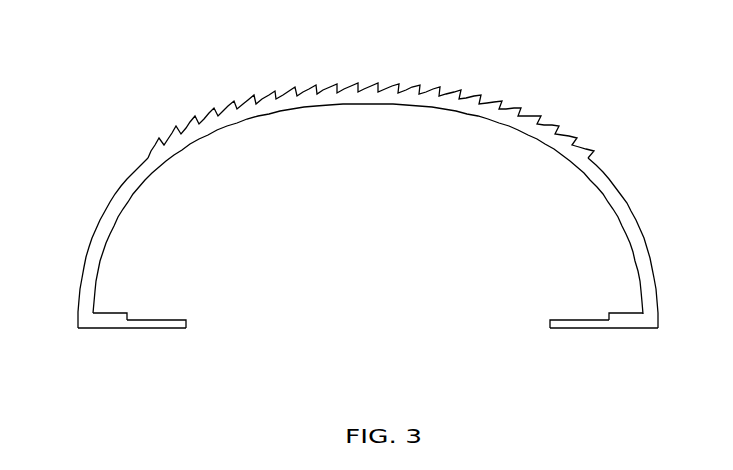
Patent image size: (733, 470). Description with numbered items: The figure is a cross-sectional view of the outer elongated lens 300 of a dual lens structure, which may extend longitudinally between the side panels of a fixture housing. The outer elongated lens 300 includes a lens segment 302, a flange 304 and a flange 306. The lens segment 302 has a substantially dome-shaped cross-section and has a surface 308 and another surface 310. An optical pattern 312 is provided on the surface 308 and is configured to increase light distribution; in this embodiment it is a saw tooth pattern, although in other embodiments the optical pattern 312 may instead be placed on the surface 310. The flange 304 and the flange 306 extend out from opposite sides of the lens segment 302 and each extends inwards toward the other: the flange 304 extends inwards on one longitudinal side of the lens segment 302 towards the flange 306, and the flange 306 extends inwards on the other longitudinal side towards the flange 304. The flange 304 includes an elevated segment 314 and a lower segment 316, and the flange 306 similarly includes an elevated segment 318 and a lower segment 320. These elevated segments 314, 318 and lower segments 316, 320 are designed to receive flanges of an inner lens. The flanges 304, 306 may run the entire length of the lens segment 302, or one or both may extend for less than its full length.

The outer elongated lens 300 is at (105, 88).
The lens segment 302 is at (637, 229).
The flange 304 is at (120, 329).
The flange 306 is at (618, 329).
The surface 308 is at (613, 187).
The surface 310 is at (540, 143).
The optical pattern 312 is at (488, 100).
The elevated segment 314 is at (117, 313).
The lower segment 316 is at (172, 320).
The elevated segment 318 is at (627, 313).
The lower segment 320 is at (572, 320).